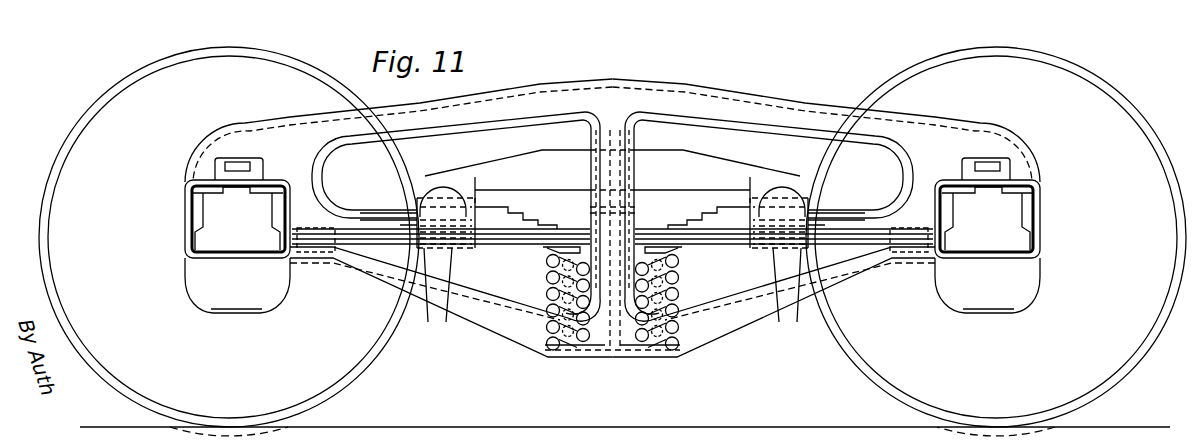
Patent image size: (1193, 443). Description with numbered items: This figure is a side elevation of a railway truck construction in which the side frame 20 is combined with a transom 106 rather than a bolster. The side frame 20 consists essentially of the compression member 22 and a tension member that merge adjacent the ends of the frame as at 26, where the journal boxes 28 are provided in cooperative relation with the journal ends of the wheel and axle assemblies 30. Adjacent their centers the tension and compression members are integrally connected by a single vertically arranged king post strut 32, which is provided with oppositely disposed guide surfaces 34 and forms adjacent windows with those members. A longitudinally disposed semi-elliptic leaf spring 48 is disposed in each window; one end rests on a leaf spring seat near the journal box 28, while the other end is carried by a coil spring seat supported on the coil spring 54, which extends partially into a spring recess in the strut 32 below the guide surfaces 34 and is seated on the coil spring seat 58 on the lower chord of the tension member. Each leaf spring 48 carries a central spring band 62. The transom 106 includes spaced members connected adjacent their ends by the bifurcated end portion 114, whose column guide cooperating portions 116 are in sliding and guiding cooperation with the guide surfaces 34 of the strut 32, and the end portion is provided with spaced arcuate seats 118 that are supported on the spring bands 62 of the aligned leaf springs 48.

The truck side frame 20 is at (770, 99).
The compression member 22 is at (740, 92).
The merged end portions 26 is at (274, 128).
The journal box 28 is at (1030, 278).
The wheel and axle assembly 30 is at (95, 122).
The king post strut 32 is at (610, 133).
The guide surfaces 34 is at (645, 135).
The semi-elliptic leaf spring 48 is at (492, 230).
The coil spring 54 is at (550, 296).
The coil spring seat 58 is at (578, 345).
The central spring band 62 is at (612, 276).
The transom 106 is at (722, 162).
The end portion 114 is at (525, 160).
The column guide cooperating portions 116 is at (640, 167).
The spaced arcuate seats 118 is at (460, 200).